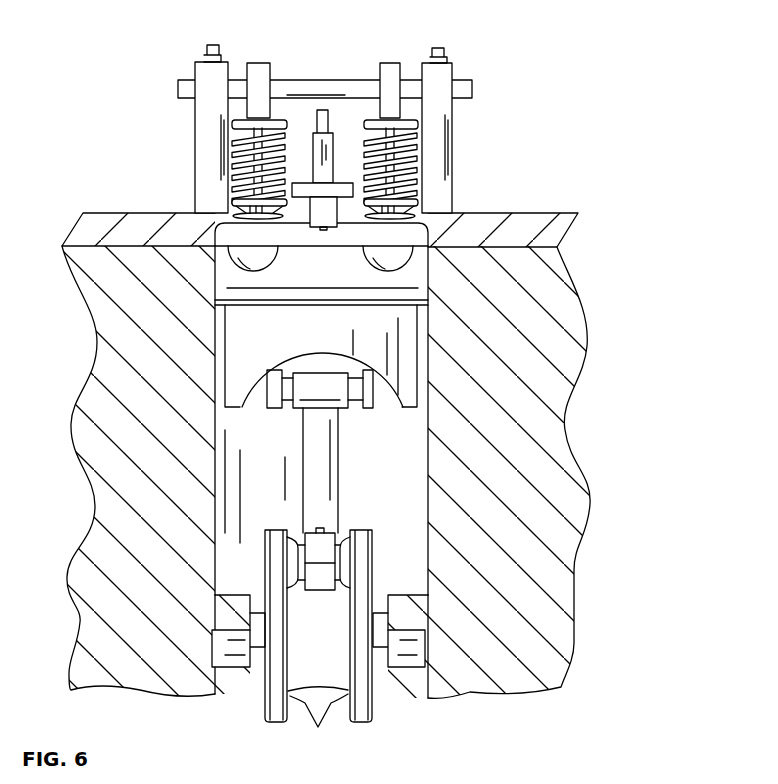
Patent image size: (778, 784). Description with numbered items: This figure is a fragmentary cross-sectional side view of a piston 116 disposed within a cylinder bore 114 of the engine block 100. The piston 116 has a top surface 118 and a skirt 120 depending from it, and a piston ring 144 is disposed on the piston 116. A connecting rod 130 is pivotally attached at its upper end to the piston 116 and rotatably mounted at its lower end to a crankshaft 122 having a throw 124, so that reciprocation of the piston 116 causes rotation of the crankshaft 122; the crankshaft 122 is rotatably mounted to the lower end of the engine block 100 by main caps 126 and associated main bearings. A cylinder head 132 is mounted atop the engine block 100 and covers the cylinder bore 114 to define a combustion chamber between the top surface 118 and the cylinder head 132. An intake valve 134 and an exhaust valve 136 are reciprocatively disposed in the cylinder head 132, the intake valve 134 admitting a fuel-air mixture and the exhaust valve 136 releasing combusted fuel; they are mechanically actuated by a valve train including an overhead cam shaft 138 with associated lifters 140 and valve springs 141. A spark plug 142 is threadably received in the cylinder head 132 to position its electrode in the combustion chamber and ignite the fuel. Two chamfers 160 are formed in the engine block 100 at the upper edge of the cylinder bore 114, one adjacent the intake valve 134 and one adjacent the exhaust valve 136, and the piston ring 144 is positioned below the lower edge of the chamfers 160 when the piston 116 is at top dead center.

The engine block 100 is at (588, 348).
The cylinder bore 114 is at (427, 560).
The piston 116 is at (412, 407).
The top surface 118 is at (413, 284).
The skirt 120 is at (250, 372).
The crankshaft 122 is at (262, 673).
The throw 124 is at (318, 643).
The main cap 126 is at (232, 668).
The connecting rod 130 is at (338, 507).
The cylinder head 132 is at (534, 213).
The intake valve 134 is at (247, 213).
The exhaust valve 136 is at (420, 213).
The overhead cam shaft 138 is at (392, 63).
The lifter 140 is at (270, 113).
The valve spring 141 is at (425, 147).
The spark plug 142 is at (325, 112).
The piston ring 144 is at (215, 286).
The chamfer 160 is at (365, 264).